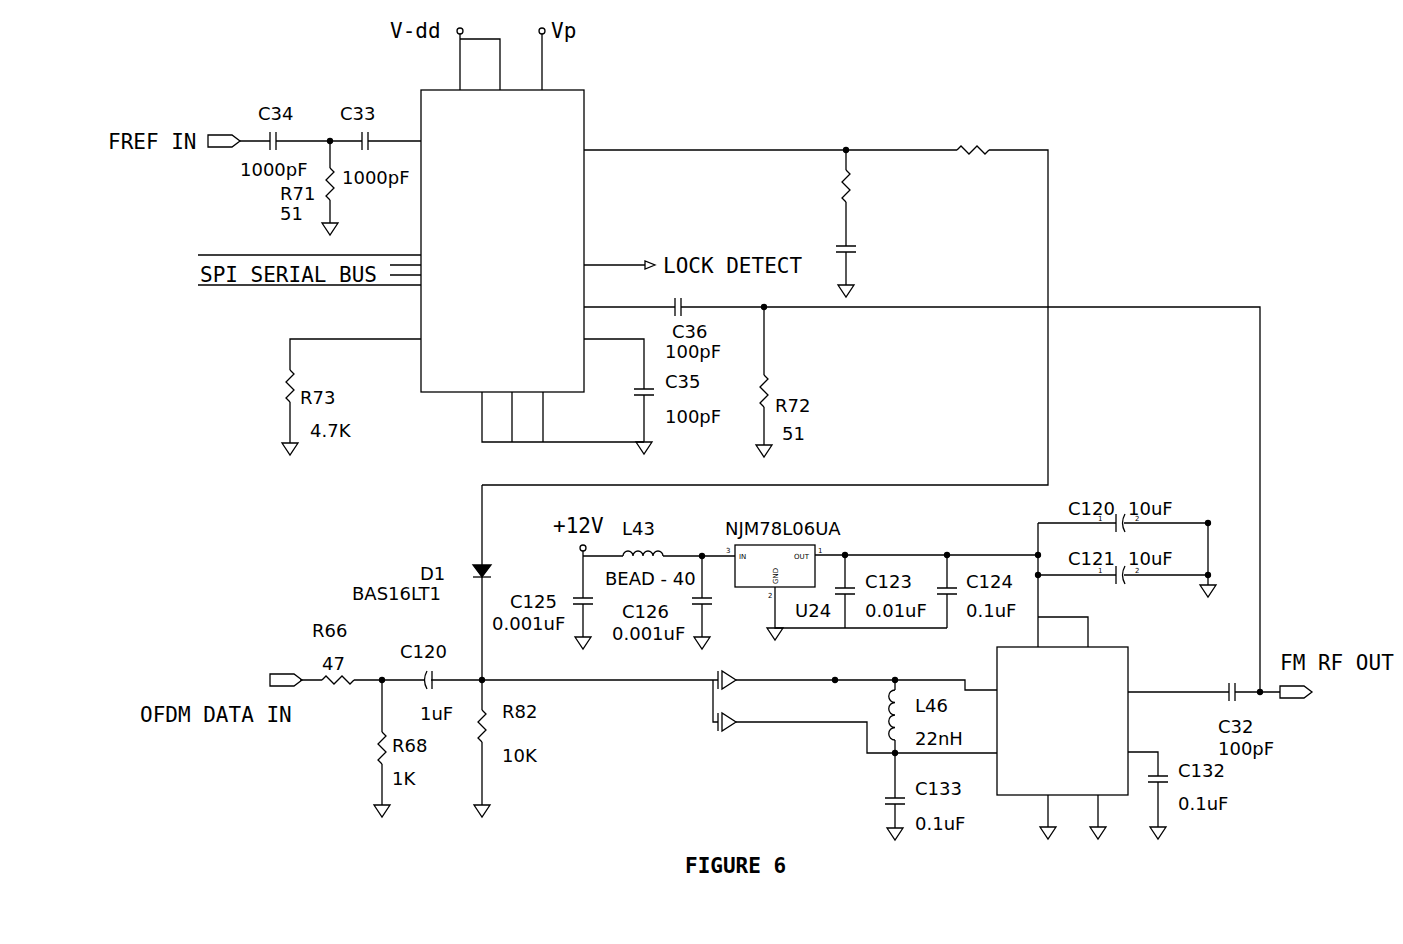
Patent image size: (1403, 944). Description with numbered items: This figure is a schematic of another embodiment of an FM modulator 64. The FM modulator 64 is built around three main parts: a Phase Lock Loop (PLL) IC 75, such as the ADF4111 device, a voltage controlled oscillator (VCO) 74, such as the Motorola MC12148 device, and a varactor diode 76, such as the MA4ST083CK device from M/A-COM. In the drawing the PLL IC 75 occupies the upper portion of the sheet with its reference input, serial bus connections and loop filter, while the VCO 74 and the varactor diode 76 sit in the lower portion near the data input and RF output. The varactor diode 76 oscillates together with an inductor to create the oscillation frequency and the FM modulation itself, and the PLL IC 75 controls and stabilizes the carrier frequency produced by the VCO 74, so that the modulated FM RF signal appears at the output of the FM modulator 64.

The Phase Lock Loop (PLL) IC 75 is at (628, 107).
The FM modulator 64 is at (1170, 202).
The voltage controlled oscillator (VCO) 74 is at (1136, 631).
The varactor diode 76 is at (750, 740).